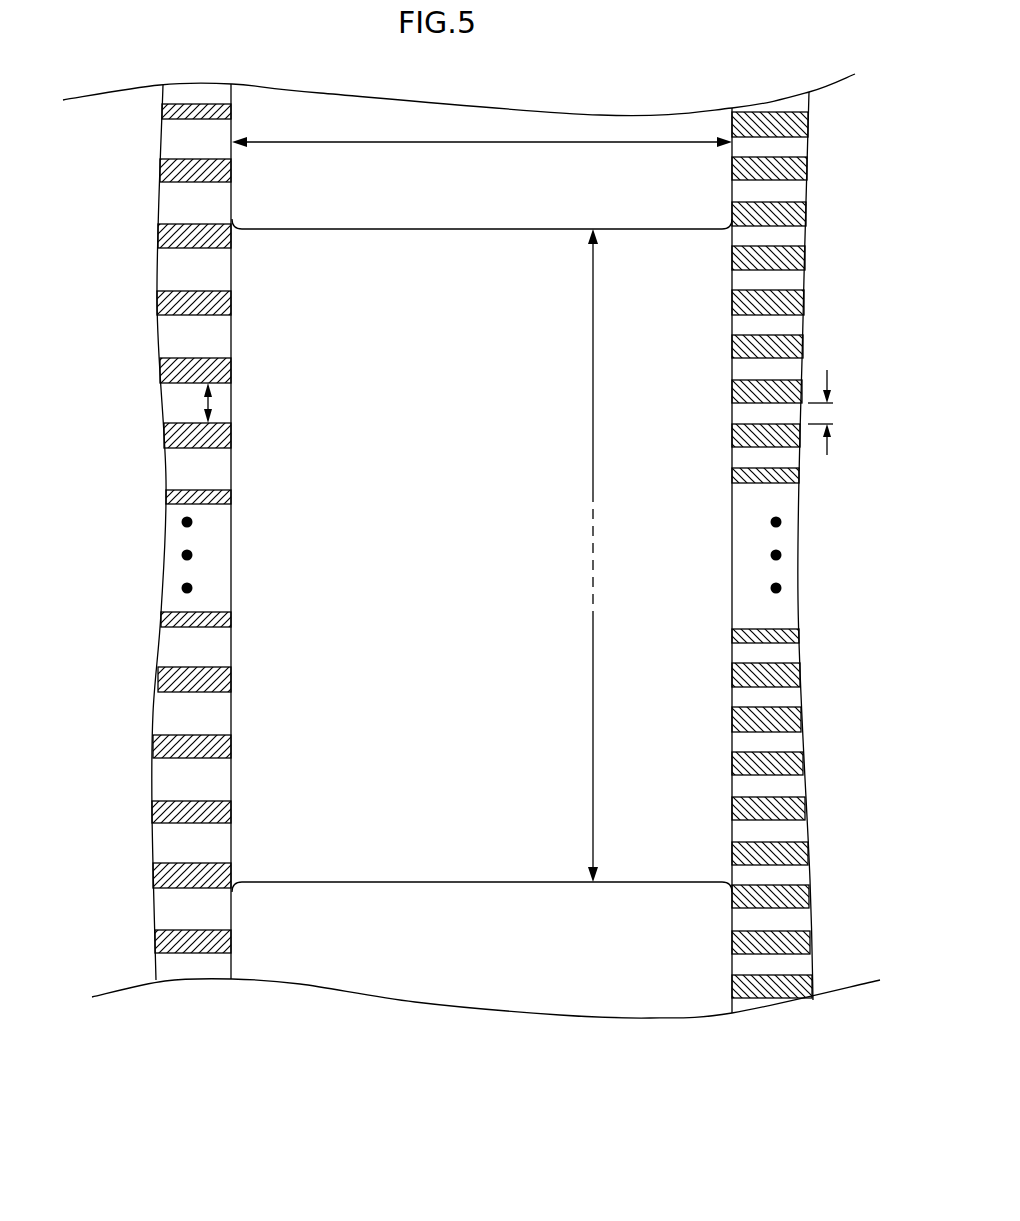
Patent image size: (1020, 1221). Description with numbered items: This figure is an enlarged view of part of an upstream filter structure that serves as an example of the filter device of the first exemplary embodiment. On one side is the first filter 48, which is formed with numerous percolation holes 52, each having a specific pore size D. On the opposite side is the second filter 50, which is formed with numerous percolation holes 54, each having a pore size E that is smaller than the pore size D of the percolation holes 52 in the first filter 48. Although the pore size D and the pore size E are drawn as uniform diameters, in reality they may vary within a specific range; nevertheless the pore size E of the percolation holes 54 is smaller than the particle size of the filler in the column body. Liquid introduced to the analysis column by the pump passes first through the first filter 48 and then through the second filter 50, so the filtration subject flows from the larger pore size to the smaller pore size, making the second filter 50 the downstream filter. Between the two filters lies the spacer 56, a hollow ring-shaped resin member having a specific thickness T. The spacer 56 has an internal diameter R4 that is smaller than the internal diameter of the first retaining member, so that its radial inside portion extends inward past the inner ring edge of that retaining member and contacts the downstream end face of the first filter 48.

The first filter 48 is at (183, 990).
The second filter 50 is at (771, 1025).
The percolation holes 52 is at (196, 666).
The percolation holes 54 is at (768, 663).
The spacer 56 is at (417, 1010).
The thickness T is at (493, 147).
The internal diameter R4 is at (592, 369).
The pore size D is at (212, 401).
The pore size E is at (828, 413).